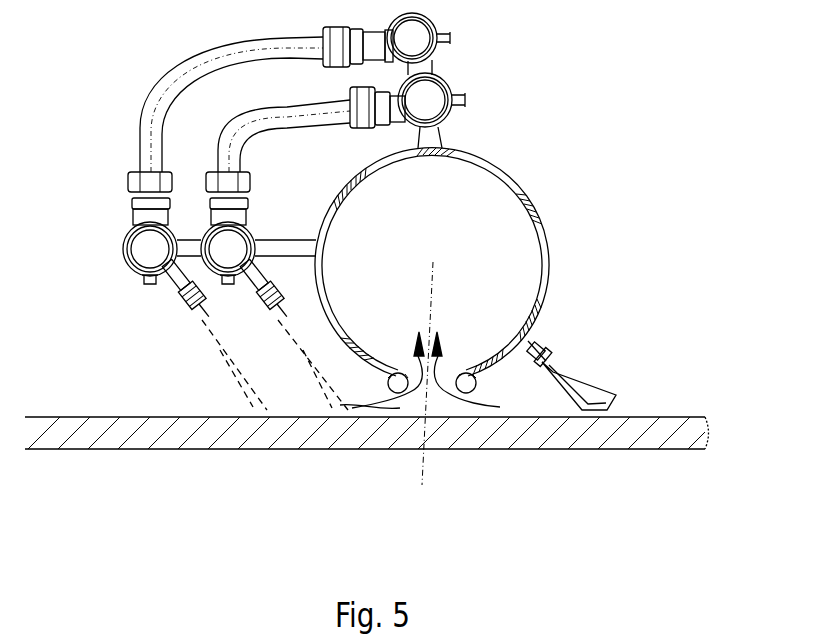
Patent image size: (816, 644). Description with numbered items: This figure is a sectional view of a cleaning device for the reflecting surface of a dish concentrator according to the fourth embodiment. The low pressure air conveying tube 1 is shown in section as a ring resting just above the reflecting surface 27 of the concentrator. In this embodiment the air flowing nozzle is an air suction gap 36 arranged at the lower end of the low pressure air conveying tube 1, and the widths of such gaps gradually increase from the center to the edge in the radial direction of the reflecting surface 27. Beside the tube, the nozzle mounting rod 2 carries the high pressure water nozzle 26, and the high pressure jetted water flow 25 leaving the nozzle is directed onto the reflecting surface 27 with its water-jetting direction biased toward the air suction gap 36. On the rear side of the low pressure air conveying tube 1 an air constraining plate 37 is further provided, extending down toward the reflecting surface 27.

The low pressure air conveying tube 1 is at (532, 197).
The nozzle mounting rod 2 is at (130, 222).
The high pressure jetted water flow 25 is at (267, 407).
The high pressure water nozzle 26 is at (175, 300).
The reflecting surface of a concentrator 27 is at (155, 450).
The air suction gap 36 is at (462, 418).
The air constraining plate 37 is at (603, 418).